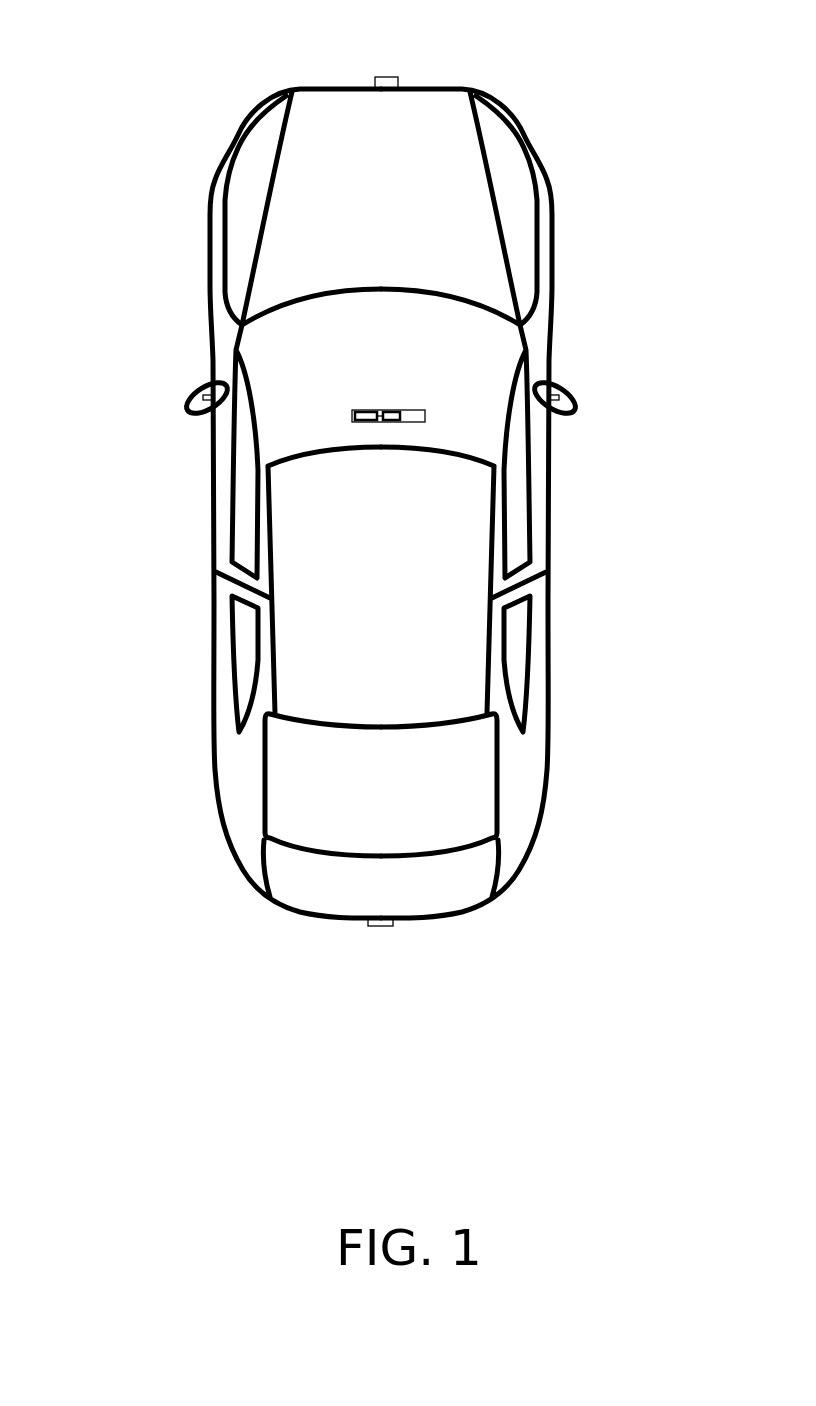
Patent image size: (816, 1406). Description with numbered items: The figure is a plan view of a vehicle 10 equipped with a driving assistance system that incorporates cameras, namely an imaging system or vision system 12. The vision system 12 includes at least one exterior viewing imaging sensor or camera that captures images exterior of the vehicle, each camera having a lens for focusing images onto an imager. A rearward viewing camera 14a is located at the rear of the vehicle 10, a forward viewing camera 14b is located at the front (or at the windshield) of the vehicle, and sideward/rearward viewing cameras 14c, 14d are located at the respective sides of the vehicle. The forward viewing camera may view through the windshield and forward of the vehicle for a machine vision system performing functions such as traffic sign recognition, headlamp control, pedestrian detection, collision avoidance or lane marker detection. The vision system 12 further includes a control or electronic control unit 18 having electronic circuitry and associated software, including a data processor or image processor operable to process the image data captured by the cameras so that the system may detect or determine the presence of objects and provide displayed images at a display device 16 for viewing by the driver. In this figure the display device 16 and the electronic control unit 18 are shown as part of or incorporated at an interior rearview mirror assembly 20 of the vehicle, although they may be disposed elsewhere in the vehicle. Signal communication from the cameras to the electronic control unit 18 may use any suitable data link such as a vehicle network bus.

The vehicle 10 is at (147, 102).
The vision system 12 is at (342, 935).
The rearward viewing camera 14a is at (387, 927).
The forward viewing camera 14b is at (388, 77).
The sideward/rearward viewing camera 14c is at (193, 389).
The sideward/rearward viewing camera 14d is at (571, 390).
The display device 16 is at (362, 408).
The electronic control unit 18 is at (383, 408).
The interior rearview mirror assembly 20 is at (425, 410).